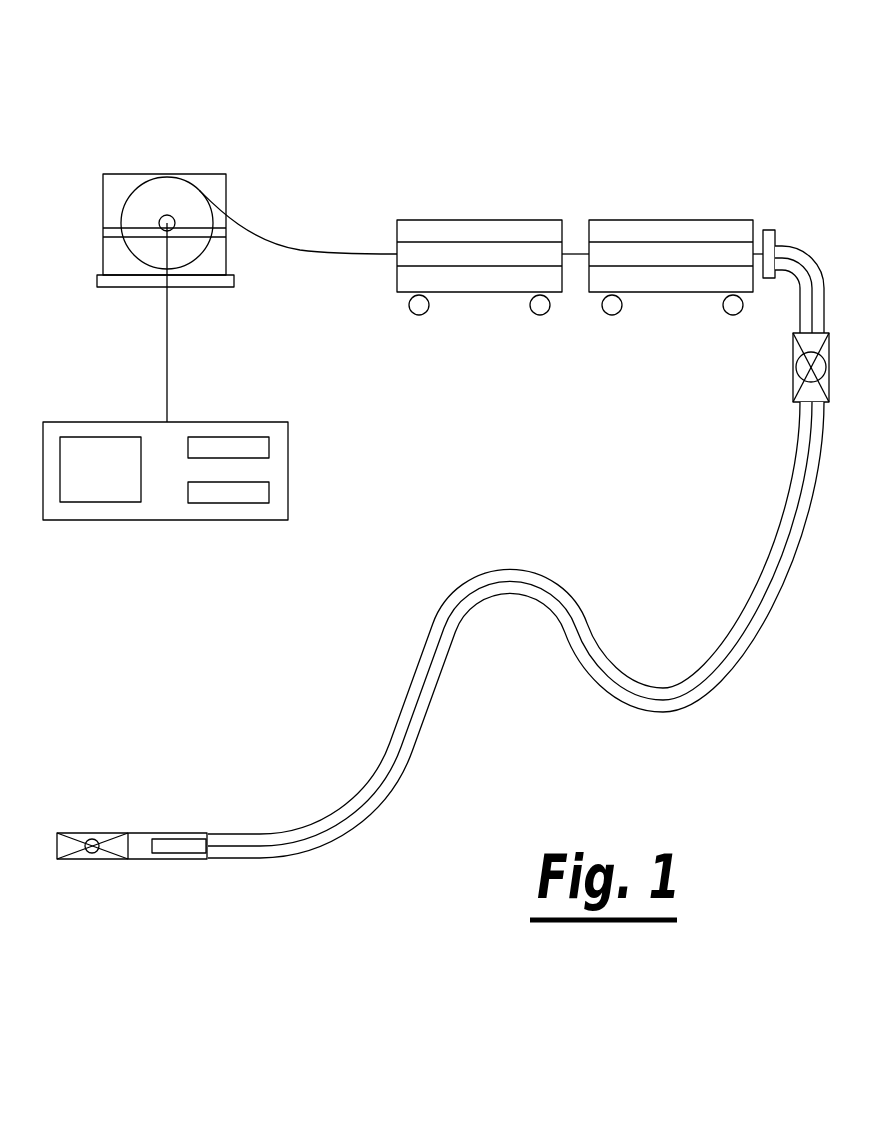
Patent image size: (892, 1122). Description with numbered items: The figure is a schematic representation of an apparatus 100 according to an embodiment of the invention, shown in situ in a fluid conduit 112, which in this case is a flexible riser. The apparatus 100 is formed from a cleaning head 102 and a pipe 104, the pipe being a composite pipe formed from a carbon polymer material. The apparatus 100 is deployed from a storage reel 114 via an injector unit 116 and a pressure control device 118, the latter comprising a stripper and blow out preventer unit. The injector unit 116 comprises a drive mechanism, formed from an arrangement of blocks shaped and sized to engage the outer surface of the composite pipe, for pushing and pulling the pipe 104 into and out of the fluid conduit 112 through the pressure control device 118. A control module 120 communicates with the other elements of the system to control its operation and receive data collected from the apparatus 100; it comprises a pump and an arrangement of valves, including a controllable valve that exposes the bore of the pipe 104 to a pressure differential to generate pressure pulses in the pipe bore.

The apparatus 100 is at (601, 157).
The cleaning head 102 is at (173, 845).
The pipe 104 is at (368, 798).
The fluid conduit 112 is at (415, 683).
The storage reel 114 is at (195, 173).
The injector unit 116 is at (440, 218).
The pressure control device 118 is at (665, 218).
The control module 120 is at (224, 420).